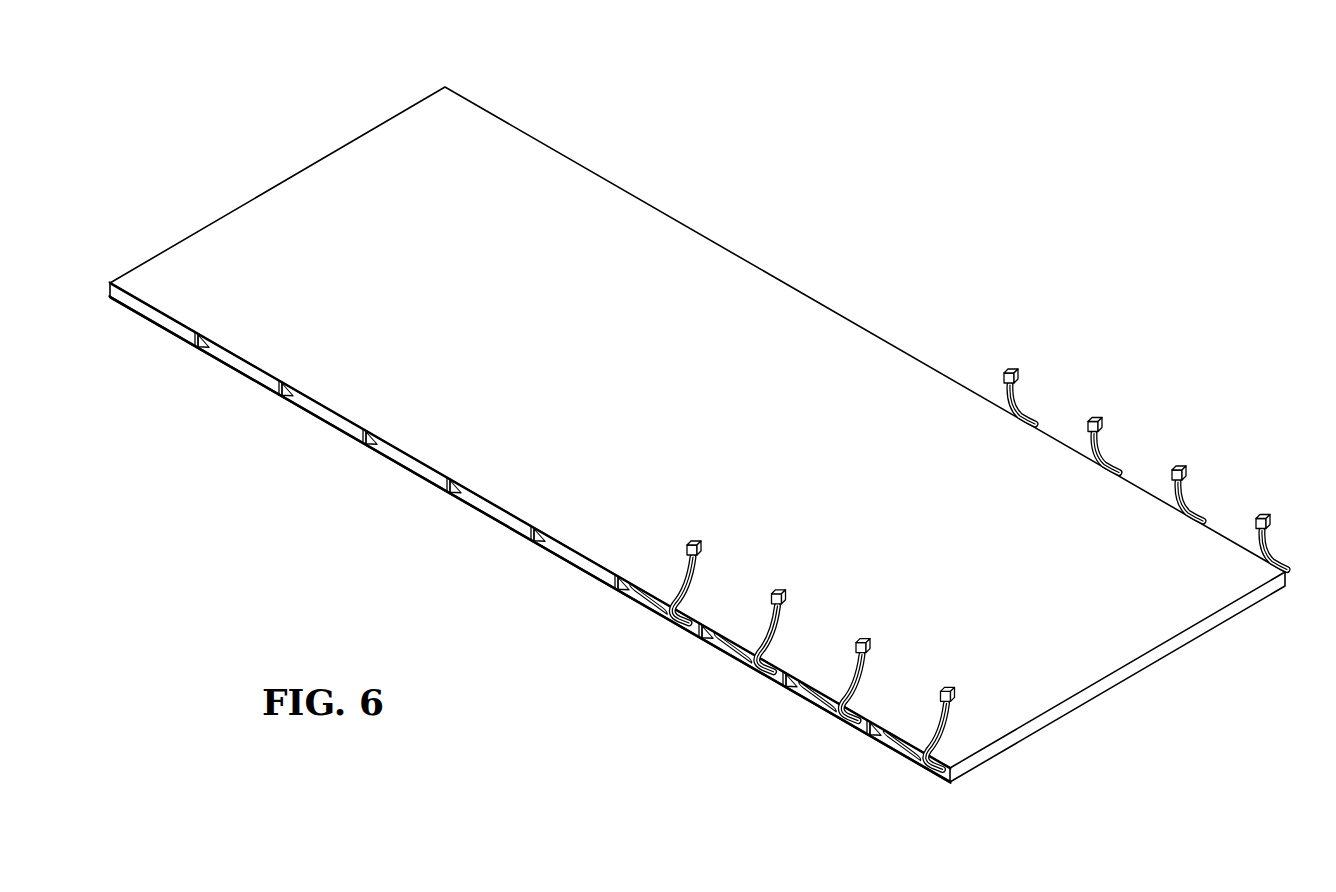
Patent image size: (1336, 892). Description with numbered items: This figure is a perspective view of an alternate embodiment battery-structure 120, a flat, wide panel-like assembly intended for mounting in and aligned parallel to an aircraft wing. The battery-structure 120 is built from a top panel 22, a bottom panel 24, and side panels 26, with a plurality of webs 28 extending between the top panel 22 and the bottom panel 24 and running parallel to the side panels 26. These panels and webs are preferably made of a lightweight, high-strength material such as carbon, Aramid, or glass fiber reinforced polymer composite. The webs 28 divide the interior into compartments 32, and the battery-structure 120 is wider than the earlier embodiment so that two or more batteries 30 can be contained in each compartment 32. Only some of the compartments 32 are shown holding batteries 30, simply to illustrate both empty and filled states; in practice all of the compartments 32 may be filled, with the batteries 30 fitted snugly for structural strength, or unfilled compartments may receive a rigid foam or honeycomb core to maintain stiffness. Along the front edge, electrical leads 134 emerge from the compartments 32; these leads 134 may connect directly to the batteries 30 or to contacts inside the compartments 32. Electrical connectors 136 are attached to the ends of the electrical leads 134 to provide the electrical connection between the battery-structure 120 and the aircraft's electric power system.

The alternate embodiment battery-structure 120 is at (864, 284).
The top panel 22 is at (513, 157).
The bottom panel 24 is at (490, 517).
The side panels 26 is at (1027, 730).
The webs 28 is at (203, 348).
The batteries 30 is at (742, 657).
The compartments 32 is at (573, 558).
The electrical leads 134 is at (766, 620).
The electrical connectors 136 is at (700, 546).